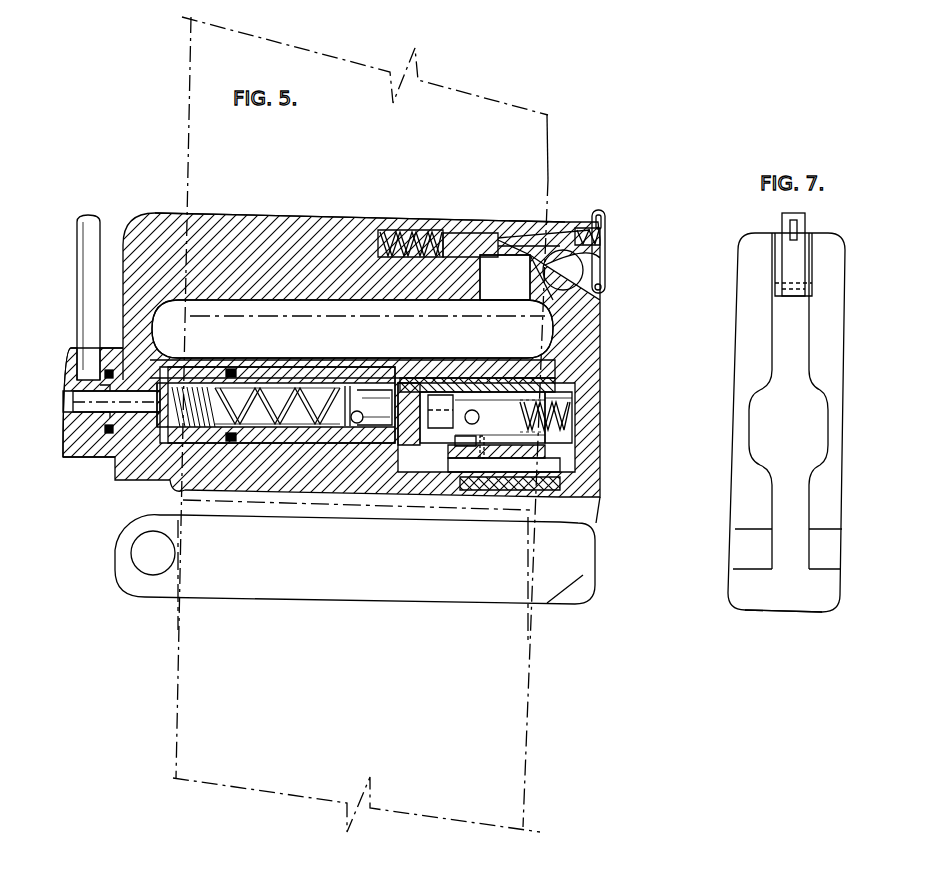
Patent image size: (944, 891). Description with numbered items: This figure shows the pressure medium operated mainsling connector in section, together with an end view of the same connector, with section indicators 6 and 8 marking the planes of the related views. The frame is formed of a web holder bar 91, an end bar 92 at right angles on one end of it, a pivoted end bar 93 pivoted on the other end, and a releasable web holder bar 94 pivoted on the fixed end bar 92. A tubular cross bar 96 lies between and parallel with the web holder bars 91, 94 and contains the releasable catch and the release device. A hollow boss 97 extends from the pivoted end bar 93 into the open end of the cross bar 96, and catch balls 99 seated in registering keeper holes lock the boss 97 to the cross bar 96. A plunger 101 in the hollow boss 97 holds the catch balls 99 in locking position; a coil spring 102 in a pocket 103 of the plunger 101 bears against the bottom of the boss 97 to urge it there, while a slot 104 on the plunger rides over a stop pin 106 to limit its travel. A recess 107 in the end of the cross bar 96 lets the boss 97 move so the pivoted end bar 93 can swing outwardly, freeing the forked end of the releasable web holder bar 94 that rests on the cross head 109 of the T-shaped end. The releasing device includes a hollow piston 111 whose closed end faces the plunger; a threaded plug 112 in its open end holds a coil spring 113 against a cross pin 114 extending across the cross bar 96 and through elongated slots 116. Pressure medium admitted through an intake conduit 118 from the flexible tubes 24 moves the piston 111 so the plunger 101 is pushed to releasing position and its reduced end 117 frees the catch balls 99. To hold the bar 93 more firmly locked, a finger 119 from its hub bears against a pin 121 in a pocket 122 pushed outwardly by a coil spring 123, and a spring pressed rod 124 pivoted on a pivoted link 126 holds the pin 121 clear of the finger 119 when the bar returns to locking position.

In FIG. 5, the section line 6- 6 is at (548, 140).
In FIG. 5, the section line 8- 8 is at (525, 690).
In FIG. 5, the flexible tubes 24 is at (82, 297).
In FIG. 5, the web holder bar 91 is at (318, 225).
In FIG. 5, the end bar 92 is at (177, 335).
In FIG. 5, the pivoted end bar 93 is at (601, 348).
In FIG. 7, the pivoted end bar 93 is at (777, 352).
In FIG. 5, the releasable web holder bar 94 is at (303, 590).
In FIG. 7, the releasable web holder bar 94 is at (740, 555).
In FIG. 5, the cross bar 96 is at (395, 367).
In FIG. 5, the hollow boss 97 is at (472, 375).
In FIG. 5, the catch balls 99 is at (474, 415).
In FIG. 5, the plunger 101 is at (560, 446).
In FIG. 5, the coil spring 102 is at (565, 420).
In FIG. 5, the pocket 103 is at (600, 395).
In FIG. 5, the slot 104 is at (456, 437).
In FIG. 5, the stop pin 106 is at (472, 482).
In FIG. 5, the recess 107 is at (562, 470).
In FIG. 5, the cross head 109 is at (588, 590).
In FIG. 7, the cross head 109 is at (795, 610).
In FIG. 5, the hollow piston 111 is at (280, 445).
In FIG. 5, the threaded plug 112 is at (190, 420).
In FIG. 5, the coil spring 113 is at (300, 388).
In FIG. 5, the cross pin 114 is at (358, 413).
In FIG. 5, the elongated slots 116 is at (355, 385).
In FIG. 5, the reduced end 117 is at (438, 410).
In FIG. 5, the intake conduit 118 is at (100, 458).
In FIG. 5, the finger 119 is at (505, 265).
In FIG. 5, the pin 121 is at (455, 235).
In FIG. 5, the pocket 122 is at (407, 228).
In FIG. 5, the coil spring 123 is at (385, 232).
In FIG. 5, the spring pressed rod 124 is at (582, 230).
In FIG. 5, the pivoted link 126 is at (605, 250).
In FIG. 7, the pivoted link 126 is at (783, 226).